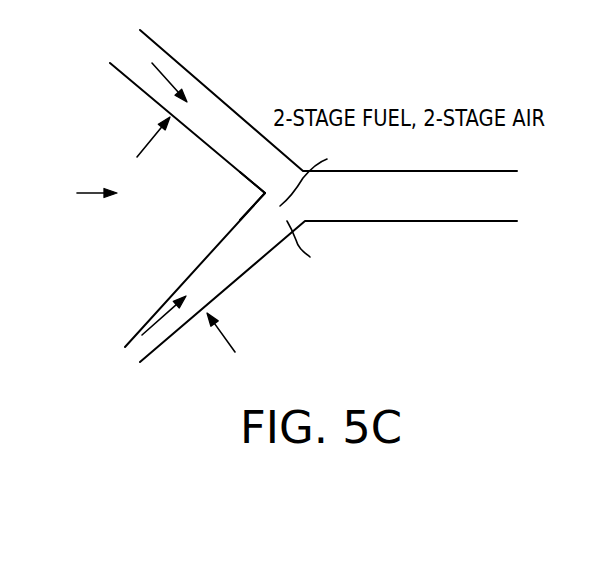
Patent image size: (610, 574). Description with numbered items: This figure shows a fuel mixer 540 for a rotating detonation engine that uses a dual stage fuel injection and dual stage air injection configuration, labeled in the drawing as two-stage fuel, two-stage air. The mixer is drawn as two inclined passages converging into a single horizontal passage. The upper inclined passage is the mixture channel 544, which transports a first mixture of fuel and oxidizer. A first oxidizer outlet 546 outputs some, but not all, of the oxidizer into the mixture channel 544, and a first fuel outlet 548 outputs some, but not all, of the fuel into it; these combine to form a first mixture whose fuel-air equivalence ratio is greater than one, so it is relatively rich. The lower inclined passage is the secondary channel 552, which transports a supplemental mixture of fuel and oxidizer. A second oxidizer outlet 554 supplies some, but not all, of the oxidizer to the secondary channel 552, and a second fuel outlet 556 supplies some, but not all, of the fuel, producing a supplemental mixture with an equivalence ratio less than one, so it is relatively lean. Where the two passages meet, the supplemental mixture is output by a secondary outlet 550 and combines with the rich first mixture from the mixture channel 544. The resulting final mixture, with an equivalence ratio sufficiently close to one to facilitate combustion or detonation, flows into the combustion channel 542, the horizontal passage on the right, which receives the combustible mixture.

The fuel mixer 540 is at (79, 193).
The combustion channel 542 is at (390, 202).
The mixture channel 544 is at (240, 166).
The first oxidizer outlet 546 is at (128, 48).
The first fuel outlet 548 is at (137, 151).
The secondary outlet 550 is at (311, 170).
The secondary channel 552 is at (313, 245).
The second oxidizer outlet 554 is at (133, 337).
The second fuel outlet 556 is at (228, 341).